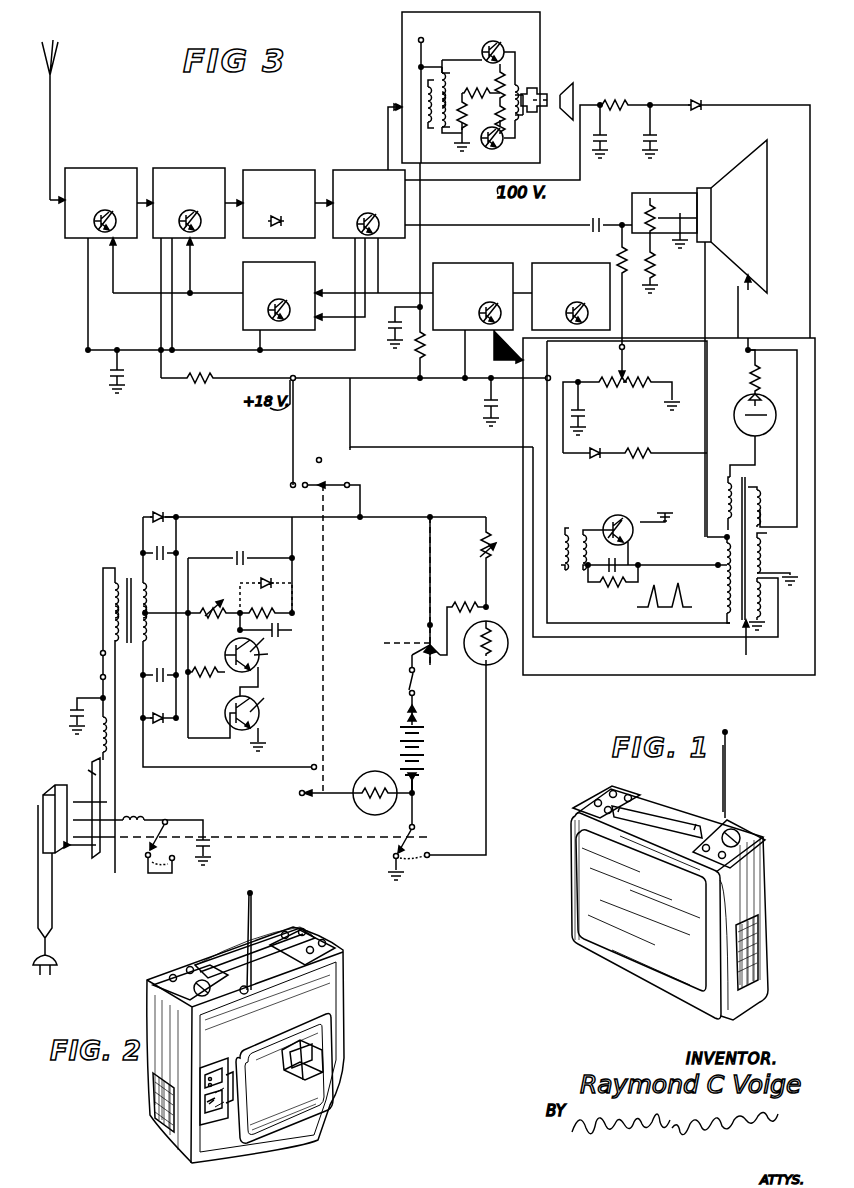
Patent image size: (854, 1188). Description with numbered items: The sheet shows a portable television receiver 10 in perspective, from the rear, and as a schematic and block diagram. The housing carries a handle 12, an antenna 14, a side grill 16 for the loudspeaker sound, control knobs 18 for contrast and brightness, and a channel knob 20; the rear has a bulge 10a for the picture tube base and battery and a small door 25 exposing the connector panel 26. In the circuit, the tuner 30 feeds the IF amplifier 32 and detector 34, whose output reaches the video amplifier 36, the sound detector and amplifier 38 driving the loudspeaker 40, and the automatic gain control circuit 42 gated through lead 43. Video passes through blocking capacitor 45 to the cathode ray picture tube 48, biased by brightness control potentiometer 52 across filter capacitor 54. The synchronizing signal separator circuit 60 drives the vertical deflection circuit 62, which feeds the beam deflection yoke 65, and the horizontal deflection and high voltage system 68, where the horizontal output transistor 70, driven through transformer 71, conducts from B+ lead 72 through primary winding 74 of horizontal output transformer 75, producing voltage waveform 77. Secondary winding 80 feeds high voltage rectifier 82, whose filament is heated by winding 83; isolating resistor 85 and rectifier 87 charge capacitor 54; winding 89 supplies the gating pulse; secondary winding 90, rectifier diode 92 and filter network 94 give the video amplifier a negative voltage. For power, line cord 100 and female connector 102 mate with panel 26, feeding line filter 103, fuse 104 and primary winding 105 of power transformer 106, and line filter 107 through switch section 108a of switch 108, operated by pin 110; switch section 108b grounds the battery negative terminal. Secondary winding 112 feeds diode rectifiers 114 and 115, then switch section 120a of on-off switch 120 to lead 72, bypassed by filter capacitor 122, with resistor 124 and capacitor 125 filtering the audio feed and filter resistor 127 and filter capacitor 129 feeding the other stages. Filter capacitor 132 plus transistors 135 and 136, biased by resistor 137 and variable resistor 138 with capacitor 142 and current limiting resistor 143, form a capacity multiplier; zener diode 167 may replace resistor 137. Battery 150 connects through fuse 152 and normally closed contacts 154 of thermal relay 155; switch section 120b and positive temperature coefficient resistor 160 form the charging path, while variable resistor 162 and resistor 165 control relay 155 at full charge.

In FIG. 1, the television receiver 10 is at (573, 868).
In FIG. 2, the television receiver 10 is at (355, 996).
In FIG. 2, the bulge 10a is at (318, 1070).
In FIG. 1, the handle 12 is at (664, 817).
In FIG. 2, the handle 12 is at (233, 957).
In FIG. 3, the antenna 14 is at (58, 65).
In FIG. 1, the antenna 14 is at (731, 796).
In FIG. 2, the antenna 14 is at (256, 919).
In FIG. 1, the grill 16 is at (761, 960).
In FIG. 2, the grill 16 is at (153, 1096).
In FIG. 1, the control knobs 18 is at (592, 795).
In FIG. 2, the control knobs 18 is at (325, 942).
In FIG. 1, the knob 20 is at (745, 837).
In FIG. 2, the knob 20 is at (185, 990).
In FIG. 2, the door 25 is at (284, 1079).
In FIG. 3, the connector panel 26 is at (92, 768).
In FIG. 2, the connector panel 26 is at (218, 1064).
In FIG. 3, the tuner 30 is at (94, 166).
In FIG. 3, the IF amplifier 32 is at (188, 166).
In FIG. 3, the detector 34 is at (278, 166).
In FIG. 3, the video amplifier 36 is at (362, 166).
In FIG. 3, the sound detector and amplifier 38 is at (531, 36).
In FIG. 3, the loudspeaker 40 is at (574, 88).
In FIG. 3, the automatic gain control circuit 42 is at (276, 260).
In FIG. 3, the lead 43 is at (396, 440).
In FIG. 3, the blocking capacitor 45 is at (594, 222).
In FIG. 3, the cathode ray picture tube 48 is at (751, 221).
In FIG. 3, the brightness control potentiometer 52 is at (630, 382).
In FIG. 3, the filter capacitor 54 is at (584, 418).
In FIG. 3, the synchronizing signal separator circuit 60 is at (466, 260).
In FIG. 3, the vertical deflection circuit 62 is at (564, 260).
In FIG. 3, the beam deflection yoke 65 is at (700, 184).
In FIG. 3, the horizontal deflection and high voltage system 68 is at (616, 680).
In FIG. 3, the horizontal output transistor 70 is at (606, 515).
In FIG. 3, the transformer 71 is at (574, 527).
In FIG. 3, the B+ lead 72 is at (383, 385).
In FIG. 3, the primary winding 74 is at (702, 573).
In FIG. 3, the horizontal output transformer 75 is at (743, 655).
In FIG. 3, the voltage waveform 77 is at (637, 607).
In FIG. 3, the secondary winding 80 is at (727, 490).
In FIG. 3, the high voltage rectifier 82 is at (758, 430).
In FIG. 3, the winding 83 is at (760, 505).
In FIG. 3, the isolating resistor 85 is at (640, 453).
In FIG. 3, the rectifier 87 is at (597, 462).
In FIG. 3, the winding 89 is at (772, 596).
In FIG. 3, the secondary winding 90 is at (765, 548).
In FIG. 3, the rectifier diode 92 is at (704, 104).
In FIG. 3, the filter network 94 is at (643, 140).
In FIG. 3, the line cord 100 is at (54, 905).
In FIG. 3, the female connector 102 is at (58, 788).
In FIG. 3, the line filter 103 is at (98, 698).
In FIG. 3, the fuse 104 is at (96, 656).
In FIG. 3, the primary winding 105 is at (108, 593).
In FIG. 3, the power transformer 106 is at (126, 566).
In FIG. 3, the line filter 107 is at (182, 812).
In FIG. 3, the switch 108 is at (264, 840).
In FIG. 3, the switch section 108a is at (160, 872).
In FIG. 3, the switch section 108b is at (415, 842).
In FIG. 3, the pin 110 is at (98, 860).
In FIG. 2, the pin 110 is at (220, 1106).
In FIG. 3, the secondary winding 112 is at (158, 646).
In FIG. 3, the diode rectifier 114 is at (164, 504).
In FIG. 3, the diode rectifier 115 is at (159, 695).
In FIG. 3, the on-off switch 120 is at (325, 627).
In FIG. 3, the switch section 120a is at (334, 481).
In FIG. 3, the switch section 120b is at (296, 786).
In FIG. 3, the filter capacitor 122 is at (488, 405).
In FIG. 3, the resistor 124 is at (436, 362).
In FIG. 3, the capacitor 125 is at (393, 355).
In FIG. 3, the filter resistor 127 is at (214, 374).
In FIG. 3, the filter capacitor 129 is at (110, 374).
In FIG. 3, the filter capacitor 132 is at (249, 556).
In FIG. 3, the transistor 135 is at (252, 713).
In FIG. 3, the transistor 136 is at (256, 665).
In FIG. 3, the resistor 137 is at (273, 605).
In FIG. 3, the variable resistor 138 is at (196, 600).
In FIG. 3, the capacitor 142 is at (278, 637).
In FIG. 3, the current limiting resistor 143 is at (205, 686).
In FIG. 3, the battery 150 is at (422, 745).
In FIG. 3, the fuse 152 is at (408, 680).
In FIG. 3, the normally closed contacts 154 is at (428, 644).
In FIG. 3, the thermal relay 155 is at (482, 663).
In FIG. 3, the positive temperature coefficient resistor 160 is at (376, 777).
In FIG. 3, the variable resistor 162 is at (499, 562).
In FIG. 3, the resistor 165 is at (476, 606).
In FIG. 3, the zener diode 167 is at (270, 583).